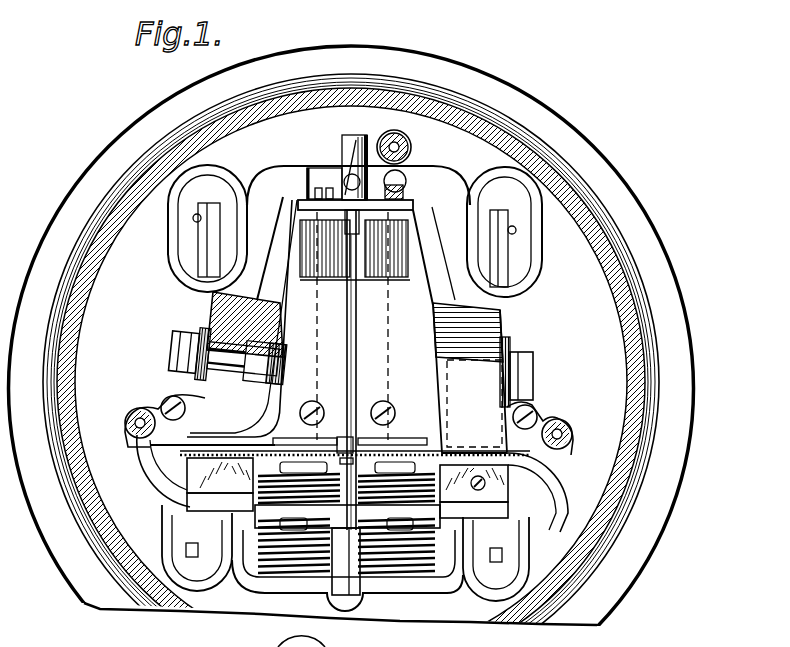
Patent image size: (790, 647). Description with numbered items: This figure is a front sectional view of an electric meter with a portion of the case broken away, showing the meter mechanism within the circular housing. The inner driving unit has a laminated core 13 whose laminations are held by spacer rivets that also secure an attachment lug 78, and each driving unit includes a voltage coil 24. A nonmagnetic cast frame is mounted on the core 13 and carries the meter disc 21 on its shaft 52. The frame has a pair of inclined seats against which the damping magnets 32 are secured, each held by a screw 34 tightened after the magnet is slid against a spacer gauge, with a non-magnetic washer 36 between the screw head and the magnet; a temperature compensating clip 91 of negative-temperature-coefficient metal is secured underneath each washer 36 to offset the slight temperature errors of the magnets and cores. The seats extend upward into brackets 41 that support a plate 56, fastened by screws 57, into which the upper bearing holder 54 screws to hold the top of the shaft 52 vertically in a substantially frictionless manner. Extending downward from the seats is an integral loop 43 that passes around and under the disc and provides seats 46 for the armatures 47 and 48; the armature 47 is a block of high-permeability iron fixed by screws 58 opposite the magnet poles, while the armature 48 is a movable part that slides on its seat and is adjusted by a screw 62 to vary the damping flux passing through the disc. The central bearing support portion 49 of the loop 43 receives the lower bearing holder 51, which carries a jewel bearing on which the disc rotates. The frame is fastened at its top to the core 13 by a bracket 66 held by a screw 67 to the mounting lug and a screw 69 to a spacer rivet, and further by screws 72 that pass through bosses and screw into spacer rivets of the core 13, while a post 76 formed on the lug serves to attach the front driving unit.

The laminated core 13 is at (454, 188).
The meter disc 21 is at (437, 593).
The voltage coil 24 is at (400, 298).
The damping magnets 32 is at (213, 305).
The screw 34 is at (172, 345).
The washer 36 is at (210, 340).
The brackets 41 is at (365, 259).
The loop 43 is at (566, 473).
The seats 46 is at (200, 501).
The armature 47 is at (188, 470).
The armature 48 is at (499, 491).
The bearing support portion 49 is at (340, 523).
The lower bearing holder 51 is at (360, 595).
The shaft 52 is at (363, 340).
The bearing holder 54 is at (351, 141).
The plate 56 is at (414, 204).
The screws 57 is at (306, 191).
The screws 58 is at (240, 522).
The screw 62 is at (481, 484).
The bracket 66 is at (330, 170).
The screw 67 is at (400, 188).
The screw 69 is at (344, 168).
The screws 72 is at (162, 400).
The post 76 is at (393, 142).
The attachment lug 78 is at (384, 138).
The temperature compensating clip 91 is at (170, 368).